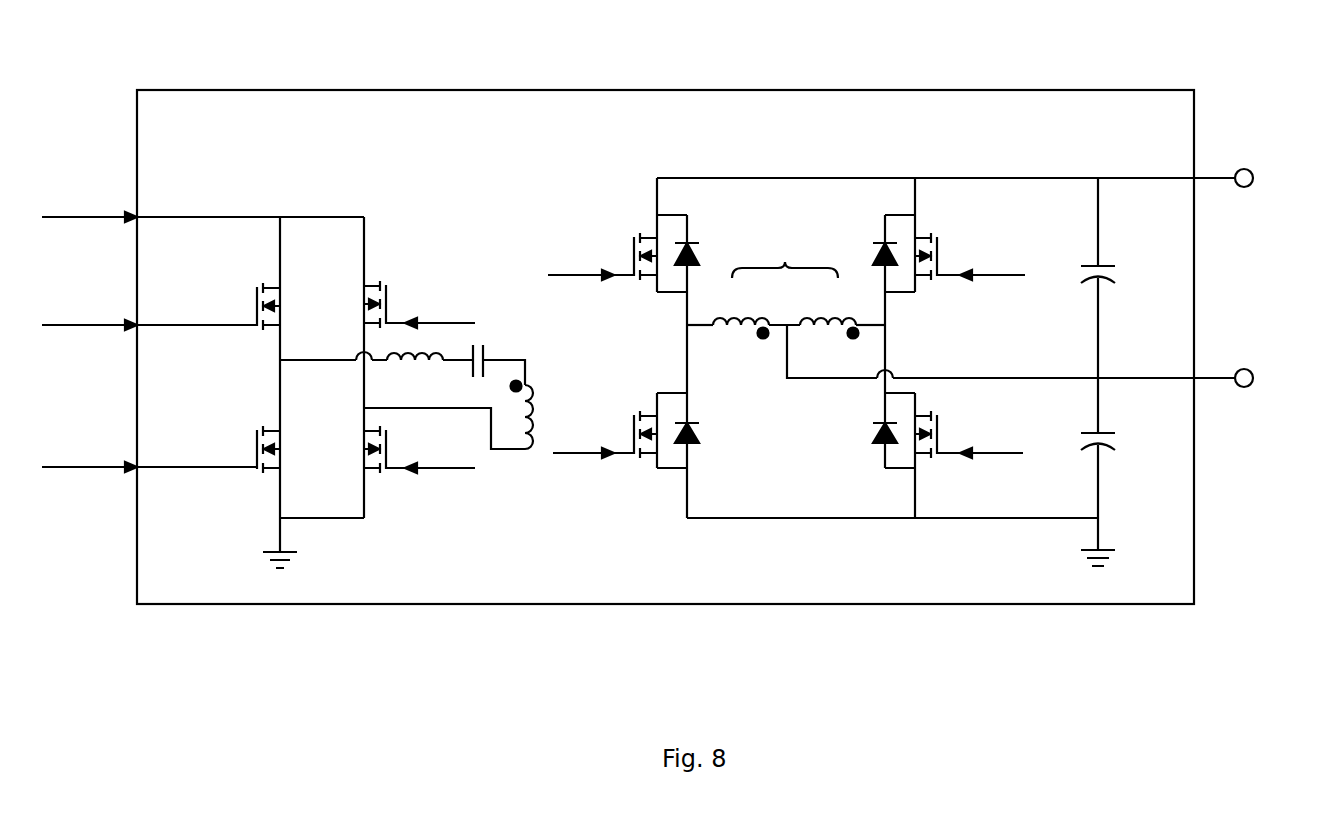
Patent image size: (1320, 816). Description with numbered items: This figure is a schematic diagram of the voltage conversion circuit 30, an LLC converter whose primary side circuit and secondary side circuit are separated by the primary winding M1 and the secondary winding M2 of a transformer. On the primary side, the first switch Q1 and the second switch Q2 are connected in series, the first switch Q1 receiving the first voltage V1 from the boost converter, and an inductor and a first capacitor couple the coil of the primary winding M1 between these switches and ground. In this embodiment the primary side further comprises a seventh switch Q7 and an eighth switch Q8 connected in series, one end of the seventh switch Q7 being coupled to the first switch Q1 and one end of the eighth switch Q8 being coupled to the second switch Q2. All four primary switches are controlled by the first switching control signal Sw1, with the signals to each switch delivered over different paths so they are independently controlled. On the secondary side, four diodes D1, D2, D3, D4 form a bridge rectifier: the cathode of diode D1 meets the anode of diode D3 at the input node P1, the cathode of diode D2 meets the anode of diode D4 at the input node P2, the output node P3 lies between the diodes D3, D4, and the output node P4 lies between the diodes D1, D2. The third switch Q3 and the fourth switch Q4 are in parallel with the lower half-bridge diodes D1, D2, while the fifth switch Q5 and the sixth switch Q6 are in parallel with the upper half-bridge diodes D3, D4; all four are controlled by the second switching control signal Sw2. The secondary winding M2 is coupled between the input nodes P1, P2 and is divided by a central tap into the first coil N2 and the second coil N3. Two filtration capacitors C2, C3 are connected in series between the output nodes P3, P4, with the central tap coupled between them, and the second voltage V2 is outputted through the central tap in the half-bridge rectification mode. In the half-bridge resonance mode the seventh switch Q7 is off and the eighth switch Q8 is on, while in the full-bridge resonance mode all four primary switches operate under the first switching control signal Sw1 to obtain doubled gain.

The voltage conversion circuit 30 is at (291, 90).
The first voltage V1 is at (203, 203).
The second voltage V2 is at (1040, 359).
The first switching control signal Sw1 is at (259, 383).
The second switching control signal Sw2 is at (789, 351).
The first switch Q1 is at (248, 306).
The second switch Q2 is at (248, 448).
The third switch Q3 is at (643, 428).
The fourth switch Q4 is at (930, 454).
The fifth switch Q5 is at (645, 252).
The sixth switch Q6 is at (929, 251).
The seventh switch Q7 is at (389, 289).
The eighth switch Q8 is at (384, 466).
The diode D1 is at (707, 421).
The diode D2 is at (862, 396).
The diode D3 is at (703, 270).
The diode D4 is at (869, 269).
The primary winding M1 is at (425, 397).
The secondary winding M2 is at (785, 256).
The first coil N2 is at (756, 311).
The second coil N3 is at (842, 311).
The input node P1 is at (680, 325).
The input node P2 is at (890, 327).
The output node P3 is at (950, 178).
The output node P4 is at (883, 535).
The filtration capacitor C2 is at (1121, 472).
The filtration capacitor C3 is at (1121, 278).